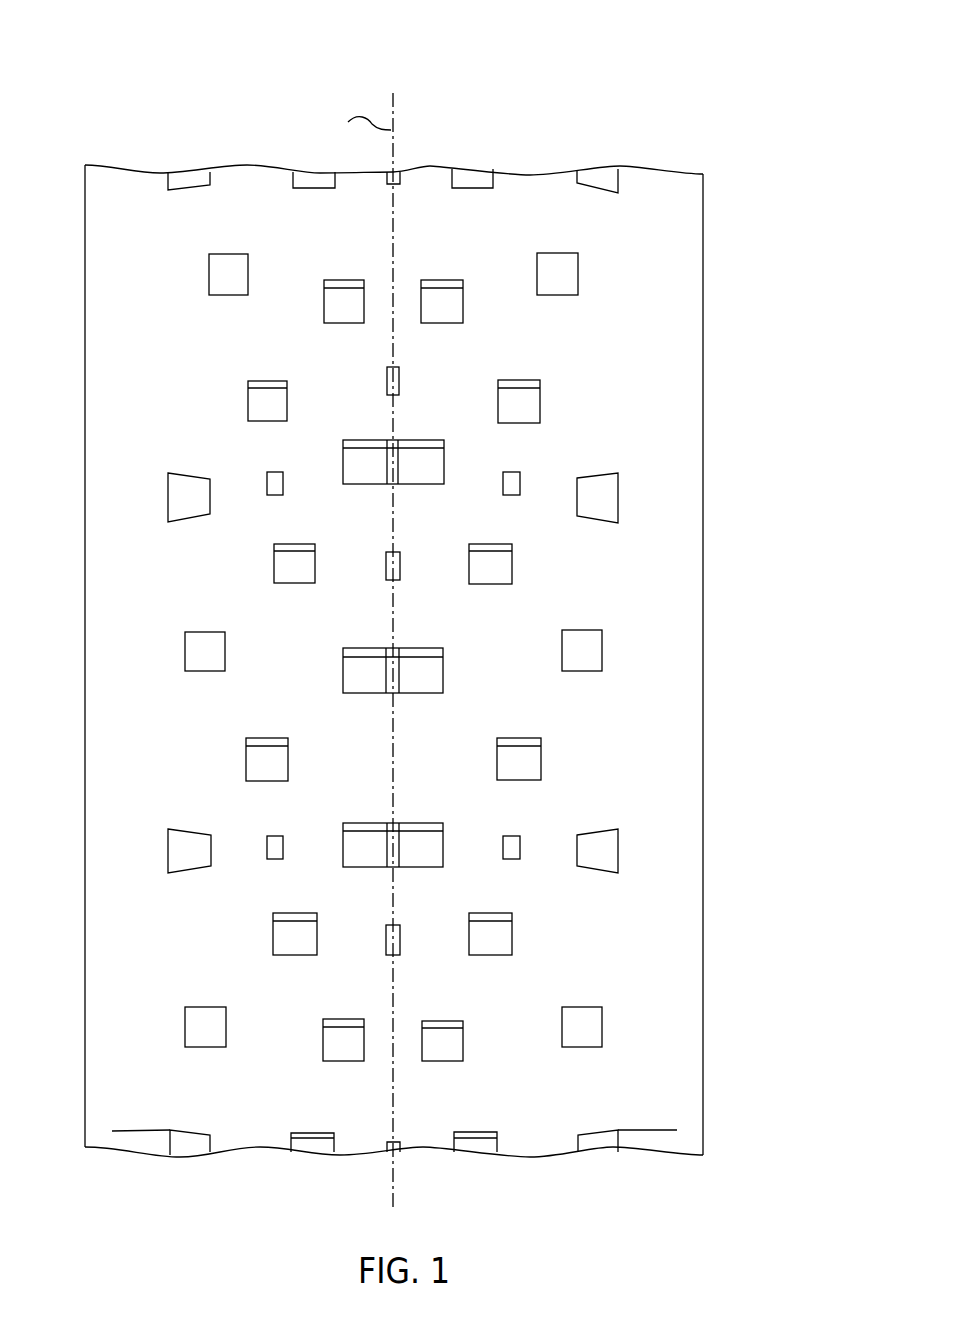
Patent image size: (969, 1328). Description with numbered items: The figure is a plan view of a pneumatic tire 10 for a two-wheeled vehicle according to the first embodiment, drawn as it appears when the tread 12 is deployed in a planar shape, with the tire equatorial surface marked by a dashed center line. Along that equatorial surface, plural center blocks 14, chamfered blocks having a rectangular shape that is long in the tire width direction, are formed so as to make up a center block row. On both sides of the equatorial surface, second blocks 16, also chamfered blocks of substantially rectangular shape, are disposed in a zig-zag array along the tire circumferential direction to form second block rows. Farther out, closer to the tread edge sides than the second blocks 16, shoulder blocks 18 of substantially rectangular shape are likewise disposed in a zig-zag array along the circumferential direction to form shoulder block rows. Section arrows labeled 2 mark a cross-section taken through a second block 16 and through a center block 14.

The pneumatic tire for a two-wheeled vehicle 10 is at (572, 80).
The tread 12 is at (536, 177).
The center blocks 14 is at (425, 440).
The second blocks 16 is at (285, 585).
The shoulder blocks 18 is at (594, 476).
The section line 2- 2 is at (295, 598).